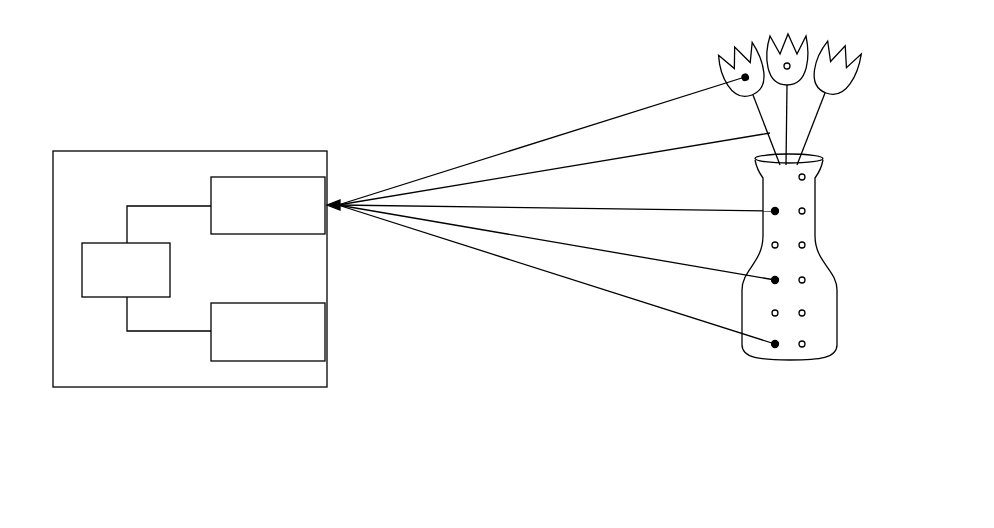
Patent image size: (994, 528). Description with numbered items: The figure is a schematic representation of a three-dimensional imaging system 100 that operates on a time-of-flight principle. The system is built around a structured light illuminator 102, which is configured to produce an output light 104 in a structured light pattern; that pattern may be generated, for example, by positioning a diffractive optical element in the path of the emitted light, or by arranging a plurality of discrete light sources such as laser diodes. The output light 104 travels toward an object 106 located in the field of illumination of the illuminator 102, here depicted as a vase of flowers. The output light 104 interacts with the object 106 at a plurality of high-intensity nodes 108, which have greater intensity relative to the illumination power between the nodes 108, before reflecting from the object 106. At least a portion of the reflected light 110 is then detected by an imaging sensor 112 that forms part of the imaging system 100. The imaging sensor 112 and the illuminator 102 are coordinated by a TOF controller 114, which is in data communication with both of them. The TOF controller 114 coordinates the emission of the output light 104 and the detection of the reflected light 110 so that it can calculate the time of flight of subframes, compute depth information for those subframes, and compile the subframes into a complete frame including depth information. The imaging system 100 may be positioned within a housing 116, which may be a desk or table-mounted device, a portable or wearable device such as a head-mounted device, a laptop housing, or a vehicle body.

The 3D imaging system 100 is at (385, 81).
The structured light illuminator 102 is at (278, 214).
The output light 104 is at (582, 123).
The object 106 is at (817, 248).
The high-intensity nodes 108 is at (805, 313).
The reflected light 110 is at (352, 323).
The imaging sensor 112 is at (278, 343).
The TOF controller 114 is at (142, 276).
The housing 116 is at (100, 388).